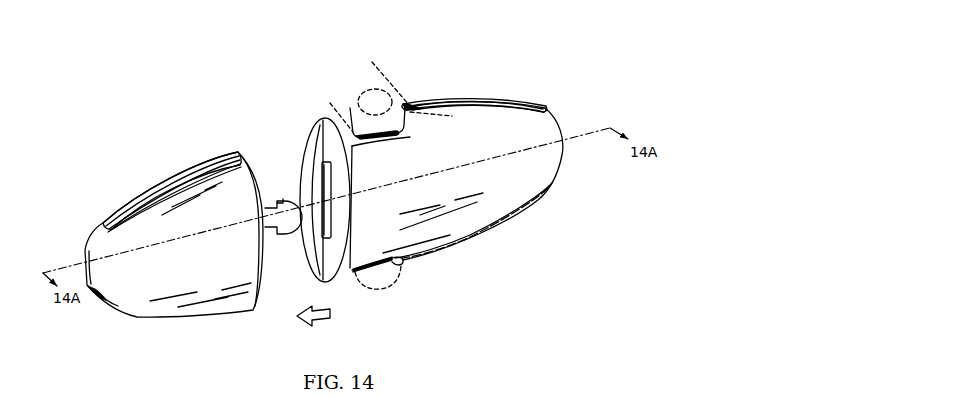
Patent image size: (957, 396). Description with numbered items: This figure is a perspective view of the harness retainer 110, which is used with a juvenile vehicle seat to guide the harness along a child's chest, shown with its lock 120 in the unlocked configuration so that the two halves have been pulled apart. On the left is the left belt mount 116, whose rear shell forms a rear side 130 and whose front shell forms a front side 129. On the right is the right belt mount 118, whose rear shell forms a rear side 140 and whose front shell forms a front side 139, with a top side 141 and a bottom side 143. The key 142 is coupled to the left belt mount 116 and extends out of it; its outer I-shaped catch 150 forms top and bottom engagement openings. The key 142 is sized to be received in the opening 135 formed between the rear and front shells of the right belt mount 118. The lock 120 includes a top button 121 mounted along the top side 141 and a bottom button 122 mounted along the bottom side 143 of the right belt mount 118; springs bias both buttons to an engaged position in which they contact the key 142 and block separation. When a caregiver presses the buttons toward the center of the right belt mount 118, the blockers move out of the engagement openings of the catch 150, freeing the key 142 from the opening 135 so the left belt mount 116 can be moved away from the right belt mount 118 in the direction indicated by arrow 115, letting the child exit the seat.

The harness retainer 110 is at (588, 44).
The left belt mount 116 is at (95, 190).
The right belt mount 118 is at (580, 195).
The rear side 130 is at (153, 183).
The front side 129 is at (153, 292).
The key 142 is at (269, 192).
The catch 150 is at (290, 240).
The opening 135 is at (319, 183).
The rear side 140 is at (518, 100).
The top side 141 is at (485, 98).
The front side 139 is at (510, 194).
The bottom side 143 is at (493, 231).
The lock 120 is at (412, 86).
The top button 121 is at (351, 121).
The bottom button 122 is at (373, 268).
The arrow 115 is at (319, 321).